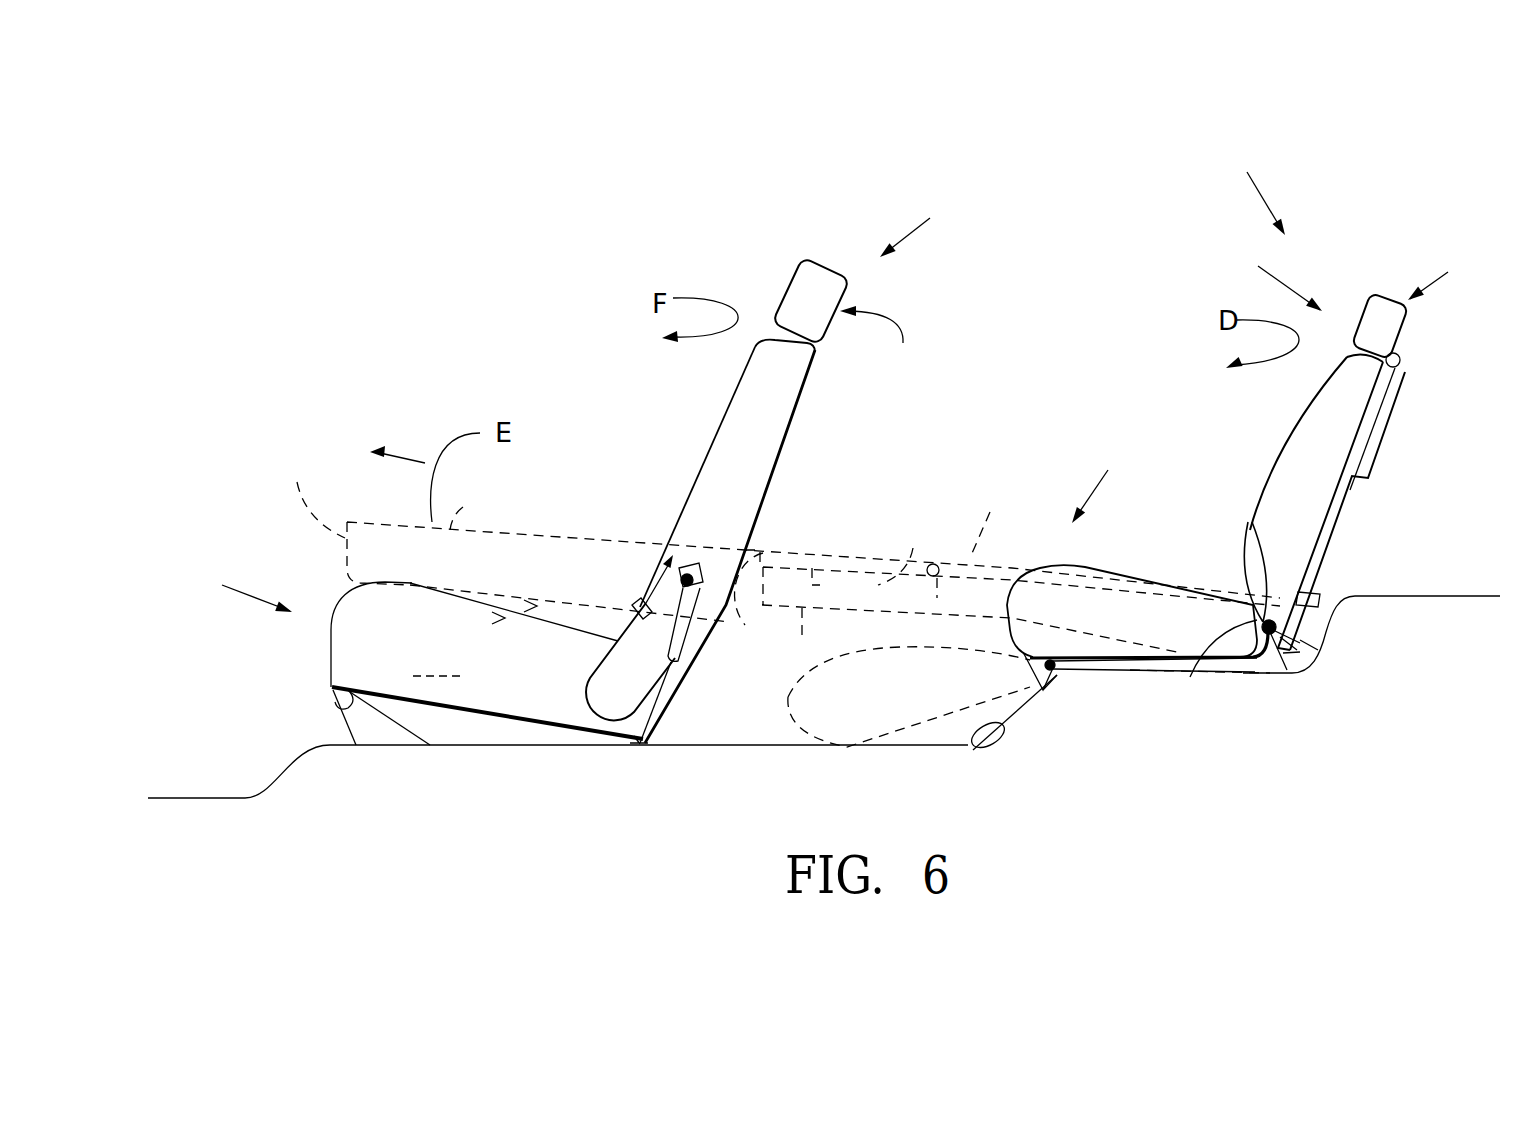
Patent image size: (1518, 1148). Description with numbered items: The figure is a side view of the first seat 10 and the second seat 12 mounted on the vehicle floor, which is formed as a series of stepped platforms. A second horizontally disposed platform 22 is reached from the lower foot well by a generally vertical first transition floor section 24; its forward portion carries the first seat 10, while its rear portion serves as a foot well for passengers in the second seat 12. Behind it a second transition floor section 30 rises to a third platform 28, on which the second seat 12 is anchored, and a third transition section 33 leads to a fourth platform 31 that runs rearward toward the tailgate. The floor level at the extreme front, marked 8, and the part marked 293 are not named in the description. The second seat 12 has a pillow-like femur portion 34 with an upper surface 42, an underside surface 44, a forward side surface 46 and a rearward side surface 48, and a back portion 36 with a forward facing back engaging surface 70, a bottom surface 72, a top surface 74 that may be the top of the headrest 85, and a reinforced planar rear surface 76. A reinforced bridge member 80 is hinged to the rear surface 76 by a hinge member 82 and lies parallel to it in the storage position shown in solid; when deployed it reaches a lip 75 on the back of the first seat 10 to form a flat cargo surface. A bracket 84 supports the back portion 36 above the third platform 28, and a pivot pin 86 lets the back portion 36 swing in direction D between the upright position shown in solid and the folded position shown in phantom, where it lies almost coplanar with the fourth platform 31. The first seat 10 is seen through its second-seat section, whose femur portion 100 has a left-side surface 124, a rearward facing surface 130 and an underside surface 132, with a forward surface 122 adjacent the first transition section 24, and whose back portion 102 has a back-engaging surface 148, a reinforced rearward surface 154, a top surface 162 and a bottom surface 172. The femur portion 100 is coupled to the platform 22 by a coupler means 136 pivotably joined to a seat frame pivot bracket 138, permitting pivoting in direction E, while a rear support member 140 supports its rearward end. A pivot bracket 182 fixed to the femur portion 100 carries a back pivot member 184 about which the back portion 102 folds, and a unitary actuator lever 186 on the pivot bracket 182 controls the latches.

The vehicle floor 8 is at (185, 797).
The first seat 10 is at (922, 226).
The second seat 12 is at (1252, 188).
The second horizontally disposed platform 22 is at (557, 743).
The first transition floor section 24 is at (290, 780).
The third horizontally disposed platform 28 is at (1243, 667).
The second transition floor section 30 is at (970, 747).
The fourth horizontally disposed platform 31 is at (1407, 597).
The third transition section 33 is at (1322, 605).
The femur portion 34 is at (773, 758).
The back portion 36 is at (1274, 274).
The upper surface 42 is at (1110, 567).
The underside surface 44 is at (1125, 662).
The forward side surface 46 is at (1050, 567).
The rearward side surface 48 is at (1250, 540).
The forward facing back engaging surface 70 is at (1300, 430).
The bottom surface 72 is at (1240, 668).
The top surface 74 is at (1395, 300).
The lip 75 is at (732, 612).
The rear surface 76 is at (1333, 540).
The bridge member 80 is at (1393, 423).
The hinge member 82 is at (1400, 350).
The bracket 84 is at (1290, 657).
The headrest 85 is at (913, 548).
The pivot pin 86 is at (1300, 623).
The femur portion 100 is at (229, 590).
The back portion 102 is at (891, 342).
The forward surface 122 is at (331, 632).
The left-side surface 124 is at (514, 629).
The rearward facing surface 130 is at (683, 722).
The underside surface 132 is at (433, 707).
The coupler means 136 is at (363, 727).
The seat frame pivot bracket 138 is at (332, 701).
The rear support member 140 is at (634, 744).
The forward-facing back-engaging surface 148 is at (773, 300).
The rearward facing surface 154 is at (818, 352).
The top surface 162 is at (820, 258).
The bottom surface 172 is at (792, 657).
The pivot bracket 182 is at (607, 672).
The back pivot member 184 is at (697, 567).
The actuator lever 186 is at (641, 612).
The pivot post 293 is at (655, 720).